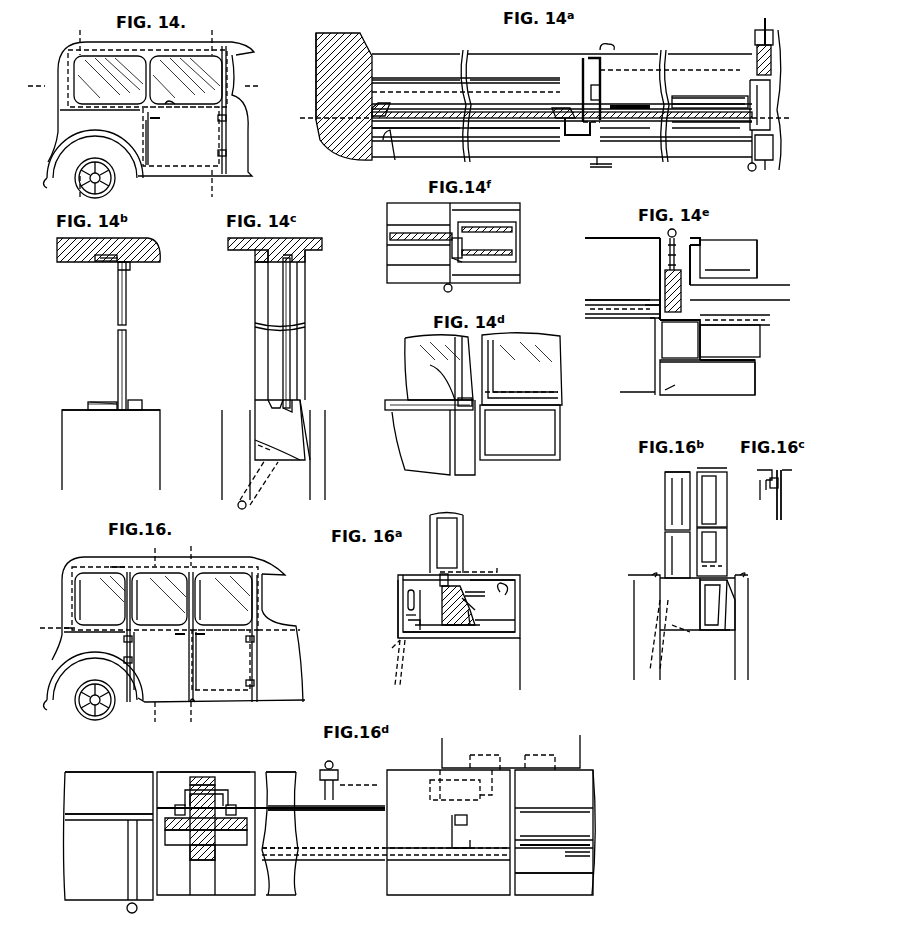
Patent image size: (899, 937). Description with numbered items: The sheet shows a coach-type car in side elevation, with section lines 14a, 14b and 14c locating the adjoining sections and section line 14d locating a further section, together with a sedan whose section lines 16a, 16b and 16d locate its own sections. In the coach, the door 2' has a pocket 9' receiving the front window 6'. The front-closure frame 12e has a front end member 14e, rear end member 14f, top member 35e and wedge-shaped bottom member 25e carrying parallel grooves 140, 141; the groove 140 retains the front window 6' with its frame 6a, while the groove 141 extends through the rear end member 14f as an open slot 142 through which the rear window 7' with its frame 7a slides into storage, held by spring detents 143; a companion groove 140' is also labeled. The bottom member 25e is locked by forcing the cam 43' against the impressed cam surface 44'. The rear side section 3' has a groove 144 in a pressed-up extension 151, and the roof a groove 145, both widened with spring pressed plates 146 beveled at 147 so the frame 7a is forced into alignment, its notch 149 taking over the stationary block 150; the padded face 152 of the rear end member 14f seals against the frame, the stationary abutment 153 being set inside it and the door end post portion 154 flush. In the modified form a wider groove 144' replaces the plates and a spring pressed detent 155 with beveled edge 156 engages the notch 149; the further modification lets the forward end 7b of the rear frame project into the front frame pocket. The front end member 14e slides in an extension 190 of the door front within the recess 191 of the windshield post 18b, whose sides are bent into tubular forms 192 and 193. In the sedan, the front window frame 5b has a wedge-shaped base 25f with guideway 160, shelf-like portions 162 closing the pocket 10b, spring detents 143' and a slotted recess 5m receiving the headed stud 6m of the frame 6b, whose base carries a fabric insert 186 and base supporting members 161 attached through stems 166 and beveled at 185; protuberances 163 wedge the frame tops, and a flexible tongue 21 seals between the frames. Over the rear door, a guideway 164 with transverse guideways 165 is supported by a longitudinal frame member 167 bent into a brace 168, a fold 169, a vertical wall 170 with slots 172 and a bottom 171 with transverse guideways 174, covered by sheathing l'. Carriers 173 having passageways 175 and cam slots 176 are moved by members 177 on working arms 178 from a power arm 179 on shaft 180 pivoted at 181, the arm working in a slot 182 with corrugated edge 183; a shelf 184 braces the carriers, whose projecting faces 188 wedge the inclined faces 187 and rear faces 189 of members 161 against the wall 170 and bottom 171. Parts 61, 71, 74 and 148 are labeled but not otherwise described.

In FIG. 14, the rear window 7' is at (110, 80).
In FIG. 14B, the rear window 7' is at (133, 336).
In FIG. 14E, the rear window 7' is at (617, 318).
In FIG. 14, the front window 6' is at (186, 80).
In FIG. 14C, the front window 6' is at (303, 333).
In FIG. 14, the rear side section 3' is at (100, 118).
In FIG. 14B, the rear side section 3' is at (111, 430).
In FIG. 14, the front-closure frame 12e is at (190, 110).
In FIG. 14C, the front-closure frame 12e is at (313, 325).
In FIG. 14, the door 2' is at (177, 138).
In FIG. 14, the pocket 9' is at (157, 142).
In FIG. 14, the section line 14a is at (258, 98).
In FIG. 14, the section line 14b is at (84, 196).
In FIG. 14, the section line 14c is at (210, 192).
In FIG. 14A, the section line 14d is at (801, 106).
In FIG. 14A, the front end member 14e is at (712, 126).
In FIG. 14C, the front end member 14e is at (255, 340).
In FIG. 14A, the rear end member 14f is at (595, 120).
In FIG. 14E, the rear end member 14f is at (655, 345).
In FIG. 14A, the spring pressed plates 146 is at (410, 98).
In FIG. 14B, the spring pressed plates 146 is at (105, 410).
In FIG. 14D, the spring pressed plates 146 is at (402, 402).
In FIG. 14A, the groove 144 is at (515, 80).
In FIG. 14B, the groove 144 is at (83, 389).
In FIG. 14A, the bevel 147 is at (372, 110).
In FIG. 14A, the latch 74 is at (590, 66).
In FIG. 14A, the open slot 142 is at (608, 91).
In FIG. 14A, the rod 61 is at (632, 108).
In FIG. 14E, the rod 61 is at (765, 330).
In FIG. 14A, the spring detents 143 is at (708, 92).
In FIG. 14A, the groove 141 is at (708, 101).
In FIG. 14F, the groove 141 is at (484, 242).
In FIG. 14C, the groove 141 is at (270, 412).
In FIG. 14A, the post 148 is at (322, 150).
In FIG. 14A, the rear window frame 7a is at (397, 145).
In FIG. 14B, the rear window frame 7a is at (128, 264).
In FIG. 14D, the rear window frame 7a is at (464, 368).
In FIG. 14E, the rear window frame 7a is at (650, 318).
In FIG. 14A, the rail 71 is at (440, 125).
In FIG. 14A, the pressed-up extension 151 is at (515, 126).
In FIG. 14B, the pressed-up extension 151 is at (138, 400).
In FIG. 14A, the padded face 152 is at (570, 135).
In FIG. 14E, the padded face 152 is at (704, 335).
In FIG. 14A, the bottom wedge-shaped member 25e is at (625, 126).
In FIG. 14C, the bottom wedge-shaped member 25e is at (257, 400).
In FIG. 14D, the bottom wedge-shaped member 25e is at (520, 435).
In FIG. 14A, the groove 140' is at (706, 126).
In FIG. 14A, the tubular form 192 is at (770, 62).
In FIG. 14A, the recess 191 is at (768, 85).
In FIG. 14A, the windshield post 18b is at (772, 142).
In FIG. 14A, the extension 190 is at (770, 142).
In FIG. 14A, the tubular form 193 is at (765, 170).
In FIG. 14F, the groove 144' is at (419, 253).
In FIG. 14E, the groove 144' is at (613, 300).
In FIG. 16, the groove 144' is at (82, 600).
In FIG. 16D, the groove 144' is at (109, 780).
In FIG. 14F, the rear window frame 7b is at (475, 258).
In FIG. 16, the rear window frame 7b is at (100, 599).
In FIG. 16A, the rear window frame 7b is at (447, 543).
In FIG. 16B, the rear window frame 7b is at (716, 528).
In FIG. 14B, the groove 145 is at (112, 262).
In FIG. 14C, the top member 35e is at (257, 260).
In FIG. 14C, the front window frame 6a is at (292, 260).
In FIG. 14D, the front window frame 6a is at (521, 401).
In FIG. 14C, the groove 140 is at (281, 418).
In FIG. 14C, the impressed cam surface 44' is at (277, 449).
In FIG. 14C, the cam 43' is at (289, 443).
In FIG. 14D, the notch 149 is at (437, 382).
In FIG. 14D, the door end post portion 154 is at (455, 440).
In FIG. 14E, the door end post portion 154 is at (672, 325).
In FIG. 16D, the door end post portion 154 is at (128, 838).
In FIG. 14D, the stationary block 150 is at (470, 410).
In FIG. 14E, the spring pressed detent 155 is at (668, 275).
In FIG. 14E, the stationary abutment 153 is at (665, 300).
In FIG. 16D, the stationary abutment 153 is at (135, 818).
In FIG. 14E, the bevel 156 is at (700, 294).
In FIG. 16, the window frame 6b is at (159, 599).
In FIG. 16A, the window frame 6b is at (446, 543).
In FIG. 16B, the window frame 6b is at (720, 553).
In FIG. 16C, the window frame 6b is at (782, 494).
In FIG. 16, the front window frame 5b is at (223, 599).
In FIG. 16B, the front window frame 5b is at (665, 544).
In FIG. 16C, the front window frame 5b is at (777, 514).
In FIG. 16D, the front window frame 5b is at (555, 824).
In FIG. 16, the section line 16a is at (152, 720).
In FIG. 16, the section line 16b is at (190, 720).
In FIG. 16, the section line 16d is at (305, 626).
In FIG. 16A, the insert 186 is at (466, 565).
In FIG. 16B, the insert 186 is at (726, 568).
In FIG. 16A, the fold 169 is at (450, 578).
In FIG. 16A, the longitudinal frame member 167 is at (515, 578).
In FIG. 16A, the vertical wall 170 is at (405, 584).
In FIG. 16D, the vertical wall 170 is at (290, 814).
In FIG. 16A, the cam slots 176 is at (408, 598).
In FIG. 16D, the cam slots 176 is at (180, 780).
In FIG. 16A, the carriers 173 is at (428, 607).
In FIG. 16D, the carriers 173 is at (194, 800).
In FIG. 16A, the cam actuating members 177 is at (406, 614).
In FIG. 16D, the cam actuating members 177 is at (226, 788).
In FIG. 16A, the power arm 179 is at (395, 645).
In FIG. 16D, the power arm 179 is at (360, 784).
In FIG. 16A, the base supporting members 161 is at (458, 630).
In FIG. 16B, the base supporting members 161 is at (713, 605).
In FIG. 16D, the base supporting members 161 is at (232, 840).
In FIG. 16A, the shelf 184 is at (483, 598).
In FIG. 16D, the shelf 184 is at (270, 852).
In FIG. 16A, the projecting faces 188 is at (481, 606).
In FIG. 16A, the brace 168 is at (512, 598).
In FIG. 16A, the bottom 171 is at (495, 624).
In FIG. 16A, the passageways 175 is at (438, 628).
In FIG. 16A, the working arms 178 is at (414, 632).
In FIG. 16D, the working arms 178 is at (473, 785).
In FIG. 16A, the transverse guideways 174 is at (494, 636).
In FIG. 16D, the transverse guideways 174 is at (202, 877).
In FIG. 16A, the sheathing l' is at (529, 664).
In FIG. 16A, the inclined faces 187 is at (466, 630).
In FIG. 16A, the rear faces 189 is at (450, 630).
In FIG. 16B, the protuberances 163 is at (720, 474).
In FIG. 16B, the flexible tongue member 21 is at (670, 506).
In FIG. 16B, the wedge-shaped base 25f is at (700, 590).
In FIG. 16B, the guideway 160 is at (700, 612).
In FIG. 16D, the guideway 160 is at (555, 853).
In FIG. 16B, the shelf-like portions 162 is at (740, 615).
In FIG. 16D, the shelf-like portions 162 is at (598, 860).
In FIG. 16B, the pocket 10b is at (680, 630).
In FIG. 16C, the slotted recess 5m is at (770, 484).
In FIG. 16C, the headed stud 6m is at (755, 492).
In FIG. 16D, the pivot points 181 is at (435, 800).
In FIG. 16D, the slots 172 is at (237, 798).
In FIG. 16D, the stems 166 is at (460, 826).
In FIG. 16D, the beveled ends 185 is at (188, 861).
In FIG. 16D, the connecting shaft 180 is at (272, 800).
In FIG. 16D, the corrugated edge 183 is at (325, 768).
In FIG. 16D, the slot 182 is at (335, 770).
In FIG. 16D, the guideway 164 is at (448, 852).
In FIG. 16D, the transverse guideways 165 is at (460, 850).
In FIG. 16D, the spring detents 143' is at (554, 875).